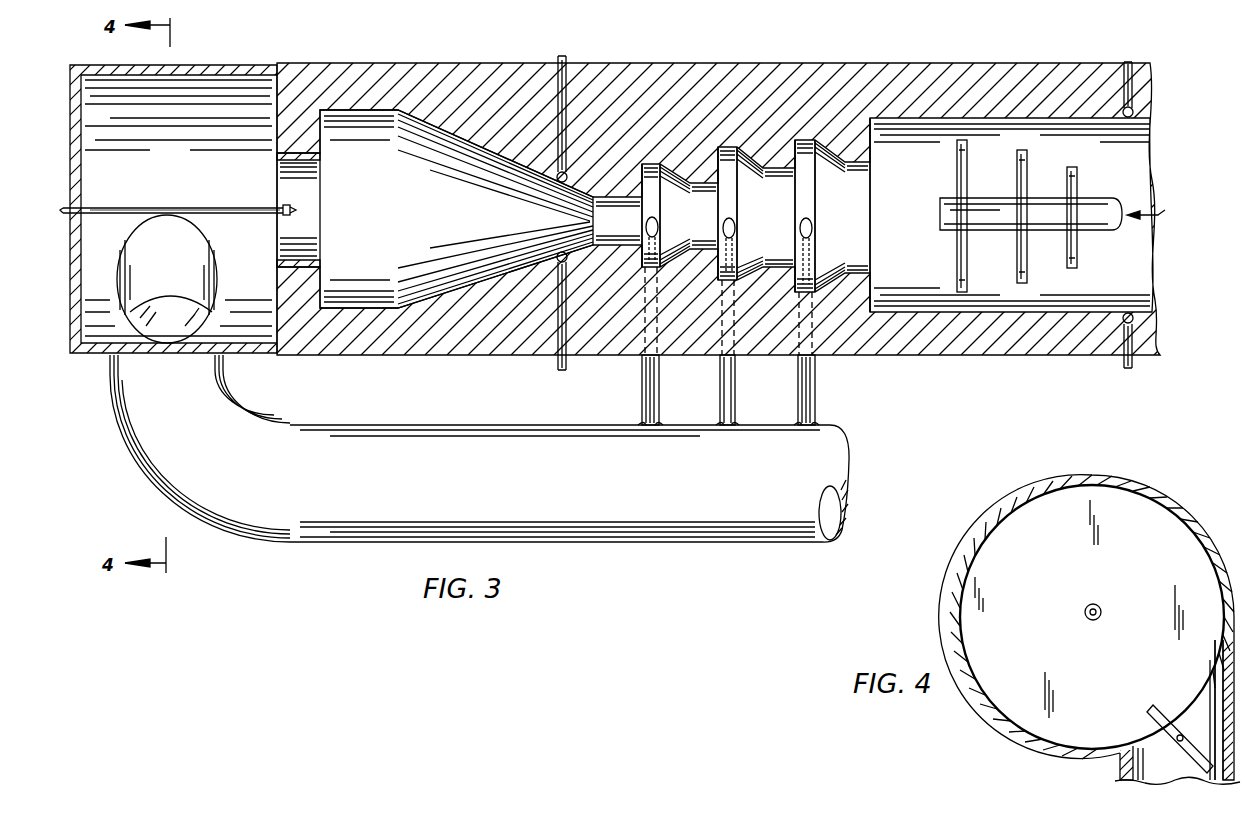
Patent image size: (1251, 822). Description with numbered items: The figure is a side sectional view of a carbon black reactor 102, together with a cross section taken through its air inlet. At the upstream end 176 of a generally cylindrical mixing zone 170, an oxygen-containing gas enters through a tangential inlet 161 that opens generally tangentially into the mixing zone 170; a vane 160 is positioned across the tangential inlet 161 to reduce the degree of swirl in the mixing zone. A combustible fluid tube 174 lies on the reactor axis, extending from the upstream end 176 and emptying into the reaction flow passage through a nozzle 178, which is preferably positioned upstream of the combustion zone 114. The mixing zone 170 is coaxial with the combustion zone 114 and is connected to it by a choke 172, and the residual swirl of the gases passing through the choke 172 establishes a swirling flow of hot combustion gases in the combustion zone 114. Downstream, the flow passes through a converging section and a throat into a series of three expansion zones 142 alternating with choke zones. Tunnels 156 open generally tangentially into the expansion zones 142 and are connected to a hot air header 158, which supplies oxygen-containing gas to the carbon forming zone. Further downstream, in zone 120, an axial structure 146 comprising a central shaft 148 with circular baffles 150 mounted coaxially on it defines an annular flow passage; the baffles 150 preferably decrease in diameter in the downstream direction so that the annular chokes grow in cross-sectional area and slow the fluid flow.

In FIG. 3, the reactor 102 is at (673, 63).
In FIG. 3, the combustion zone 114 is at (456, 209).
In FIG. 3, the plenum chamber 120 is at (920, 236).
In FIG. 3, the expansion zones 142 is at (648, 205).
In FIG. 3, the axial structure 146 is at (1167, 215).
In FIG. 3, the central shaft 148 is at (1100, 197).
In FIG. 3, the circular baffles 150 is at (968, 192).
In FIG. 3, the tunnels 156 is at (648, 236).
In FIG. 3, the hot air header 158 is at (752, 545).
In FIG. 3, the vane 160 is at (166, 336).
In FIG. 4, the vane 160 is at (1167, 714).
In FIG. 3, the tangential inlet 161 is at (215, 256).
In FIG. 4, the tangential inlet 161 is at (1205, 687).
In FIG. 3, the mixing zone 170 is at (178, 208).
In FIG. 3, the choke 172 is at (316, 165).
In FIG. 3, the combustible fluid tube 174 is at (250, 207).
In FIG. 3, the upstream end 176 is at (85, 146).
In FIG. 3, the nozzle 178 is at (297, 206).